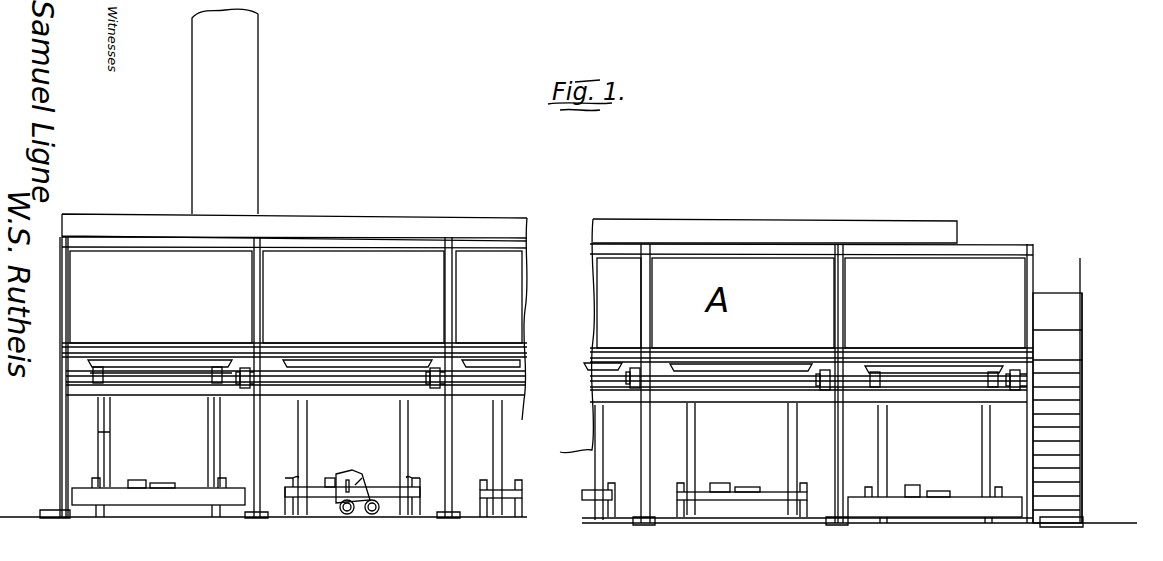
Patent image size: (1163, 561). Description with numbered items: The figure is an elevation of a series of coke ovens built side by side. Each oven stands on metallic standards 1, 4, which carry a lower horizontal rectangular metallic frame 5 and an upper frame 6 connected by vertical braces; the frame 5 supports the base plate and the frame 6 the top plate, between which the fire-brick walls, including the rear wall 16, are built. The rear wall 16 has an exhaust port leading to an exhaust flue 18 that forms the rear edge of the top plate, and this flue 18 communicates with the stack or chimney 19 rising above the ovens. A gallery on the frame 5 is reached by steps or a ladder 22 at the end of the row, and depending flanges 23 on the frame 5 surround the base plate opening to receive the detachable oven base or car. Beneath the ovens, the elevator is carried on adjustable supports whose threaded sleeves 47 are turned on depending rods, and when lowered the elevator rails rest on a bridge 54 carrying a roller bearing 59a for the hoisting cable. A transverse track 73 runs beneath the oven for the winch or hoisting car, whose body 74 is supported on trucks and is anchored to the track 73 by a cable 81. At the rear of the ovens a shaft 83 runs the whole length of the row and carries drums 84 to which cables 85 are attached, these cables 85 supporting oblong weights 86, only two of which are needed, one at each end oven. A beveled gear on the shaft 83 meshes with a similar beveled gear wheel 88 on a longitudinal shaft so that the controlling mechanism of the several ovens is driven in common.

The metallic standard 1 is at (1063, 452).
The metallic standard 4 is at (837, 463).
The horizontal rectangular metallic frame 5 is at (228, 322).
The horizontal rectangular metallic frame 6 is at (215, 250).
The rear wall 16 is at (547, 299).
The exhaust flue 18 is at (350, 222).
The stack or chimney 19 is at (256, 72).
The steps or ladder 22 is at (1063, 400).
The depending flange 23 is at (122, 357).
The sleeve 47 is at (383, 428).
The bridge 54 is at (318, 490).
The roller bearing 59a is at (148, 468).
The track 73 is at (482, 520).
The body 74 is at (355, 485).
The cable 81 is at (335, 507).
The shaft 83 is at (147, 376).
The drum 84 is at (96, 380).
The cable 85 is at (943, 442).
The oblong weight 86 is at (155, 498).
The beveled gear wheel 88 is at (265, 367).